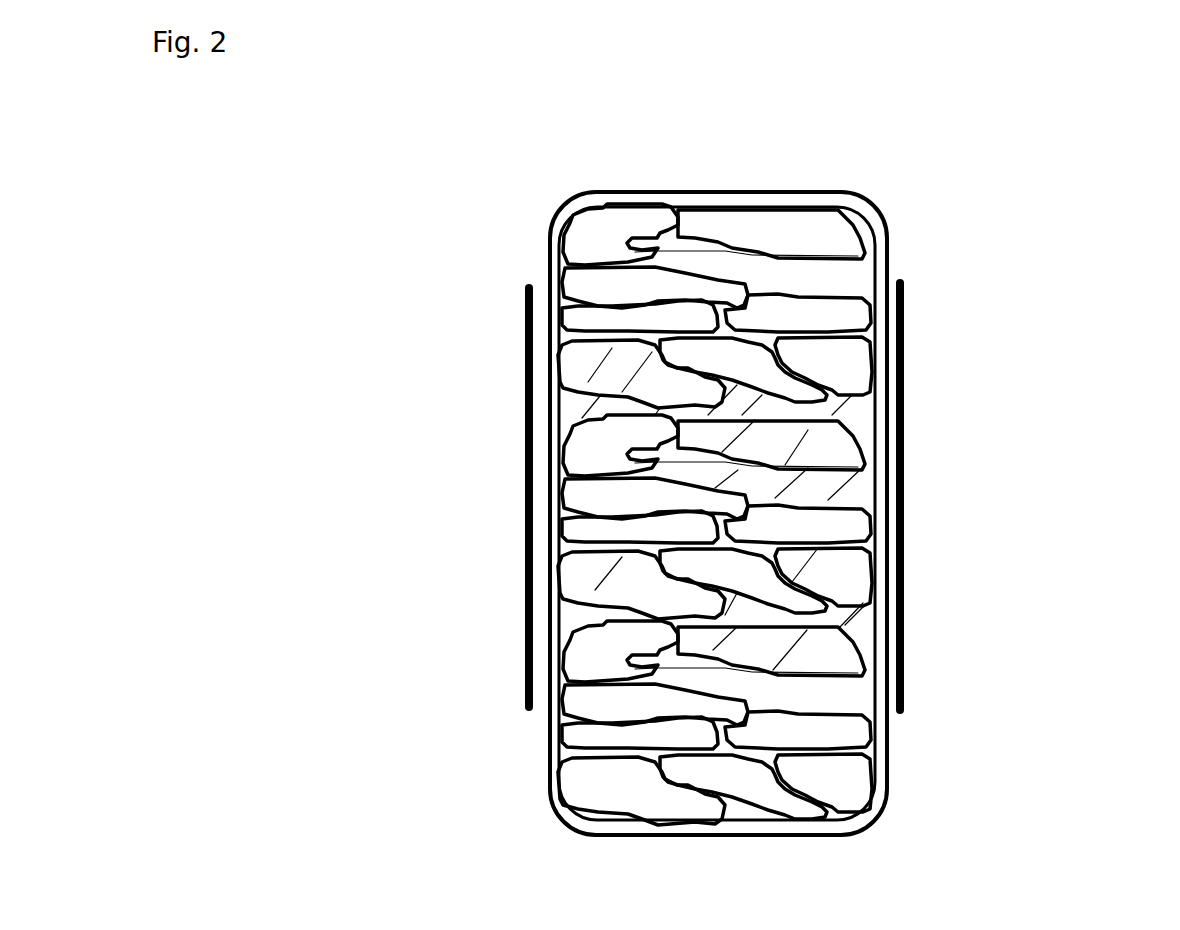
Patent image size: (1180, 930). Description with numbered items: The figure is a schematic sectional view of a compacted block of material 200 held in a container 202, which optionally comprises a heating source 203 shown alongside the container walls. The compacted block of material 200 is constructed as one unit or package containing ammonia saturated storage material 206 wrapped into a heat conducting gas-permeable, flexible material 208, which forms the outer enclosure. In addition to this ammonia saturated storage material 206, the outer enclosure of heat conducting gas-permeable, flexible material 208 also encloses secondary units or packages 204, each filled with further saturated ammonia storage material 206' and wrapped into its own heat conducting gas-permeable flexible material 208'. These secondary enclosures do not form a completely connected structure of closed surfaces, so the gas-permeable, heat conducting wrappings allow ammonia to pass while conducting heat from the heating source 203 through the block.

The compacted block of material 200 is at (865, 222).
The container 202 is at (890, 248).
The heating source 203 is at (905, 350).
The secondary units or packages 204 is at (853, 527).
The ammonia saturated storage material 206 is at (859, 417).
The further saturated ammonia storage material 206' is at (820, 612).
The heat conducting gas-permeable flexible material 208 is at (560, 212).
The heat conducting gas-permeable flexible material 208' is at (893, 723).